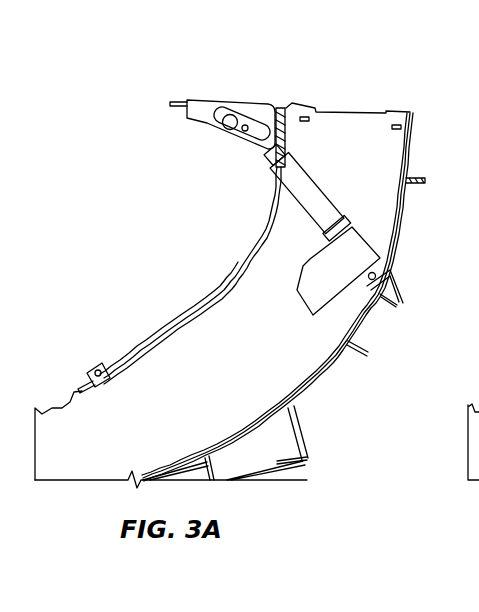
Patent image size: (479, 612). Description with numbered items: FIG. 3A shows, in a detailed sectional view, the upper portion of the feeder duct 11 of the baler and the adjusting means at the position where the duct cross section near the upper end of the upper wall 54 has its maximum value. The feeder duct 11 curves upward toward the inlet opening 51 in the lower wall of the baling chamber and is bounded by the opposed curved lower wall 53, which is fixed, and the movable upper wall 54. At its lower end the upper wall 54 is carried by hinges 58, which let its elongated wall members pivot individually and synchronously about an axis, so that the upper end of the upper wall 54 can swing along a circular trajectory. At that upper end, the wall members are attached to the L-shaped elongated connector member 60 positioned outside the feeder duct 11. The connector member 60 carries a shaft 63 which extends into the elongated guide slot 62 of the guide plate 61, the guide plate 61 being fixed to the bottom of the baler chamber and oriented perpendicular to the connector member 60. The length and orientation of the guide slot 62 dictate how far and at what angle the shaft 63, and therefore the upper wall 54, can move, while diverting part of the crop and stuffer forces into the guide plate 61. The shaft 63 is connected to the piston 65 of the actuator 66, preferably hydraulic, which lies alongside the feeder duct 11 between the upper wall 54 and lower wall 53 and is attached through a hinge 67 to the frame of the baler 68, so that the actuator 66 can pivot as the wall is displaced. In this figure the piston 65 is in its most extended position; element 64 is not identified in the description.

The feeder duct 11 is at (236, 333).
The inlet opening 51 is at (352, 108).
The lower wall 53 is at (321, 374).
The upper wall 54 is at (182, 327).
The hinges 58 is at (87, 370).
The elongated connector member 60 is at (285, 110).
The guide plate 61 is at (202, 122).
The elongated guide slot 62 is at (230, 140).
The shaft 63 is at (220, 128).
The pin 64 is at (199, 98).
The piston 65 is at (245, 145).
The actuator 66 is at (368, 248).
The hinge 67 is at (375, 275).
The frame of the baler 68 is at (400, 296).